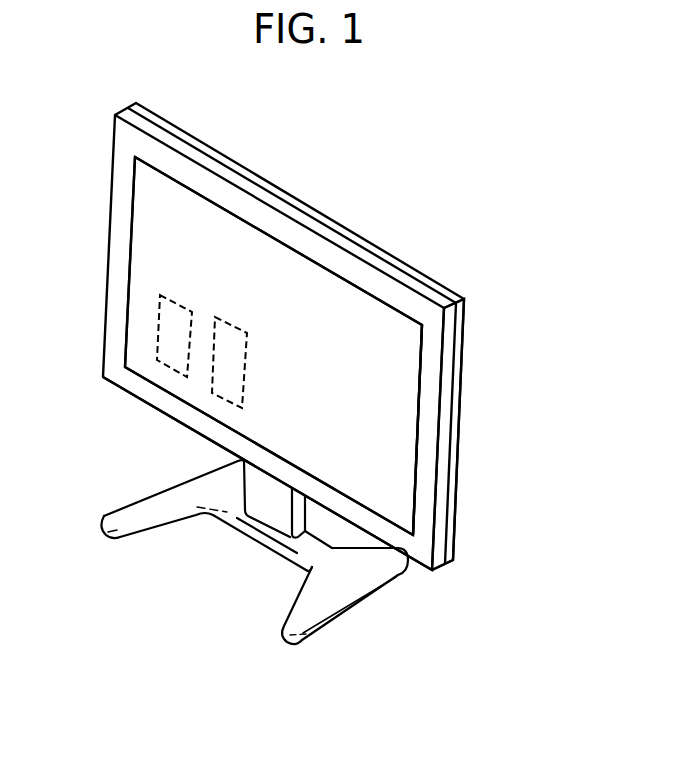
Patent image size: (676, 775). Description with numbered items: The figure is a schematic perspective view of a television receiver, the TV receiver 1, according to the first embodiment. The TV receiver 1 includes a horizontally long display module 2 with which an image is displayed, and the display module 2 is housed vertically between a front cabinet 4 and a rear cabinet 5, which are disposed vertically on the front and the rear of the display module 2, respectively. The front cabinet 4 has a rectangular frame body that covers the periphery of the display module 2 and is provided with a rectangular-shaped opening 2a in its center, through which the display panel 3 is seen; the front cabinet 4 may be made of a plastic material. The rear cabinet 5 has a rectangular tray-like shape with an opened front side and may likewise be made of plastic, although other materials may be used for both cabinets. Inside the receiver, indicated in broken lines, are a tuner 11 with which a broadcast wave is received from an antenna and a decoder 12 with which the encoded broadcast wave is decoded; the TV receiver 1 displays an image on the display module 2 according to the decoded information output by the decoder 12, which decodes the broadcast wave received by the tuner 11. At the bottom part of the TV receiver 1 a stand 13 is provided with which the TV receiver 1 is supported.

The TV receiver 1 is at (410, 195).
The display module 2 is at (397, 399).
The opening 2a is at (428, 360).
The display panel 3 is at (360, 320).
The front cabinet 4 is at (423, 497).
The rear cabinet 5 is at (458, 452).
The tuner 11 is at (173, 353).
The decoder 12 is at (228, 387).
The stand 13 is at (348, 592).